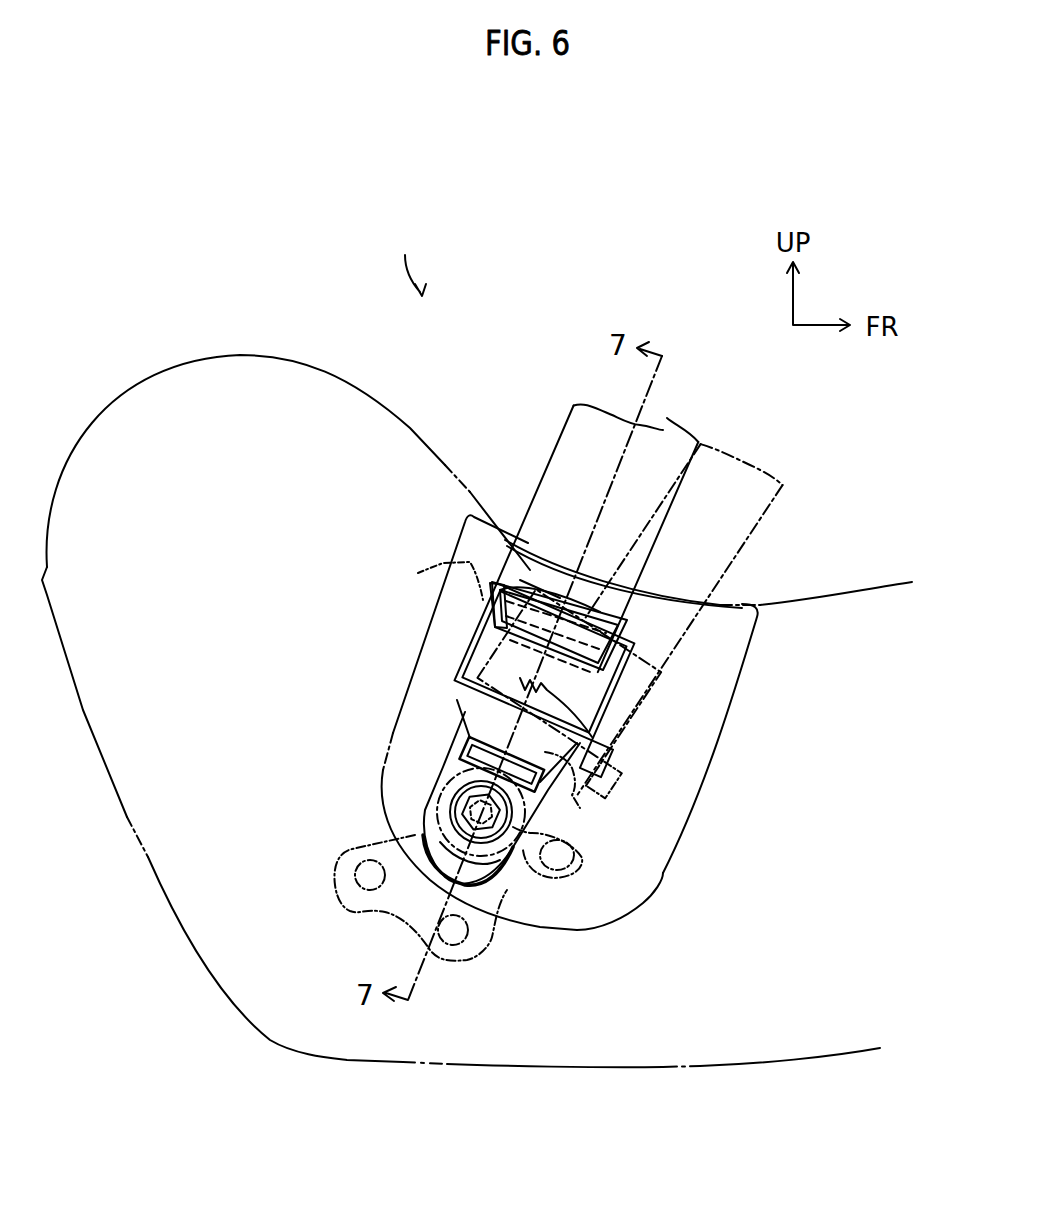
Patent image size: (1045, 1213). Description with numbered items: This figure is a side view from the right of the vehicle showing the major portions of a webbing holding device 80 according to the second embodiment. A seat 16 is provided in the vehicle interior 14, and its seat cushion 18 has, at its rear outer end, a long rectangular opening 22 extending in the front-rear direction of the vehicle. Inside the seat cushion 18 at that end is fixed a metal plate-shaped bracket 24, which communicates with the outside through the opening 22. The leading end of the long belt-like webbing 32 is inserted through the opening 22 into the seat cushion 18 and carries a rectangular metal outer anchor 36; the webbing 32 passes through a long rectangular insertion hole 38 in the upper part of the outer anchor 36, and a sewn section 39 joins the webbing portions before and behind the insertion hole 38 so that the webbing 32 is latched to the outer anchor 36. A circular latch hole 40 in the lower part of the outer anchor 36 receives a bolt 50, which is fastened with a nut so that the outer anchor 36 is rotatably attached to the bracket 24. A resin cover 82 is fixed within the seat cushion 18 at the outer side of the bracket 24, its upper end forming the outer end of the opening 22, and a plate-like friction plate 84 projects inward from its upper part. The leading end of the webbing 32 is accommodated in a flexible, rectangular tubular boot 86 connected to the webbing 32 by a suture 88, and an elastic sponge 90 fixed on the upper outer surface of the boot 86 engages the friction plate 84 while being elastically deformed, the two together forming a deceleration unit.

The vehicle interior 14 is at (843, 415).
The seat 16 is at (461, 695).
The seat cushion 18 is at (378, 393).
The opening 22 is at (663, 595).
The bracket 24 is at (350, 912).
The webbing 32 is at (570, 424).
The outer anchor 36 is at (458, 722).
The insertion hole 38 is at (460, 743).
The sewn section 39 is at (527, 577).
The latch hole 40 is at (442, 804).
The bolt 50 is at (443, 778).
The webbing holding device 80 is at (610, 577).
The cover 82 is at (546, 628).
The friction plate 84 is at (488, 586).
The boot 86 is at (454, 642).
The suture 88 is at (605, 752).
The sponge 90 is at (470, 612).